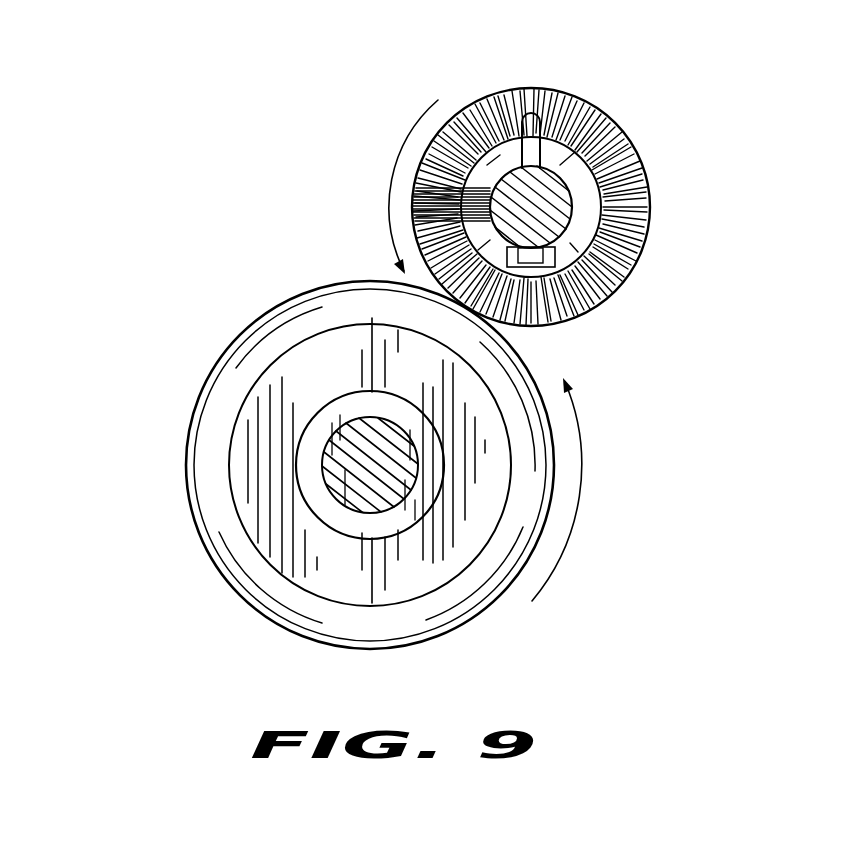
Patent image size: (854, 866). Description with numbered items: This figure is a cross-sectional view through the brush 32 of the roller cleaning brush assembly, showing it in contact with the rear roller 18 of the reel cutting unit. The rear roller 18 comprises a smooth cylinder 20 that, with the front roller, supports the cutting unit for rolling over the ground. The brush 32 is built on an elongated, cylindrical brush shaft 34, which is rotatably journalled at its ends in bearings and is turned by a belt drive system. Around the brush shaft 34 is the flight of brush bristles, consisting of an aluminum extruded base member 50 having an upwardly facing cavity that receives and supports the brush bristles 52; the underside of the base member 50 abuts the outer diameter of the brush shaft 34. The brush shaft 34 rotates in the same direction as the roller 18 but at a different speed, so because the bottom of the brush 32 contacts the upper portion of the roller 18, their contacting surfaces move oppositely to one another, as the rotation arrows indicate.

The rear roller 18 is at (200, 384).
The smooth cylinder 20 is at (300, 293).
The brush 32 is at (641, 118).
The brush shaft 34 is at (575, 206).
The base member 50 is at (500, 115).
The brush bristles 52 is at (627, 280).